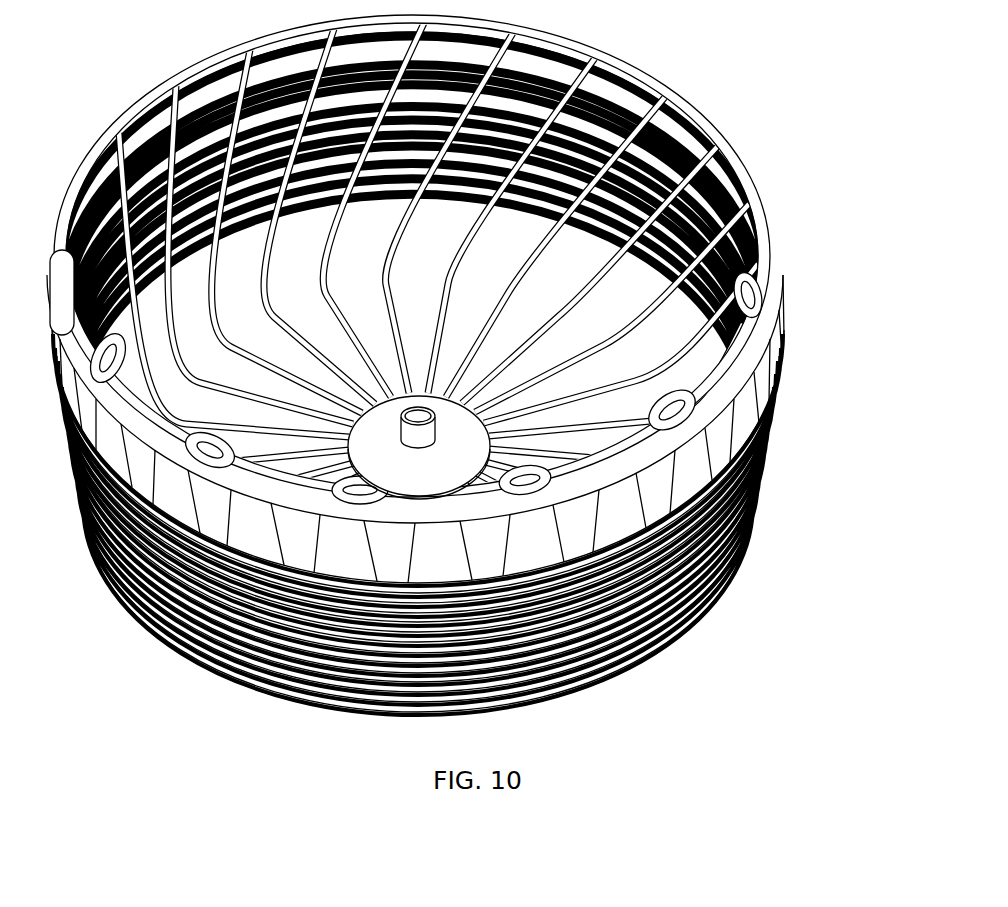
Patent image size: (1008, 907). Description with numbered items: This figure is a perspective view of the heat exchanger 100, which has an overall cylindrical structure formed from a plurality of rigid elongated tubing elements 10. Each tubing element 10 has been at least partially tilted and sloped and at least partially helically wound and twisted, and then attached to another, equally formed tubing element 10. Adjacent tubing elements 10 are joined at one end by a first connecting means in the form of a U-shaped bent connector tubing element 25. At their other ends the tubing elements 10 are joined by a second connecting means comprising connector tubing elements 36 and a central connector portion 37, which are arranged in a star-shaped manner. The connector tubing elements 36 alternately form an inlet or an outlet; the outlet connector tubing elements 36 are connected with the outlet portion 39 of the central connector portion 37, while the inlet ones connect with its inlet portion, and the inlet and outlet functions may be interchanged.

The heat exchanger 100 is at (442, 365).
The tubing element 10 is at (443, 259).
The connector tubing element 25 is at (762, 257).
The connector tubing element 36 is at (632, 400).
The central connector portion 37 is at (438, 483).
The outlet portion 39 is at (428, 432).